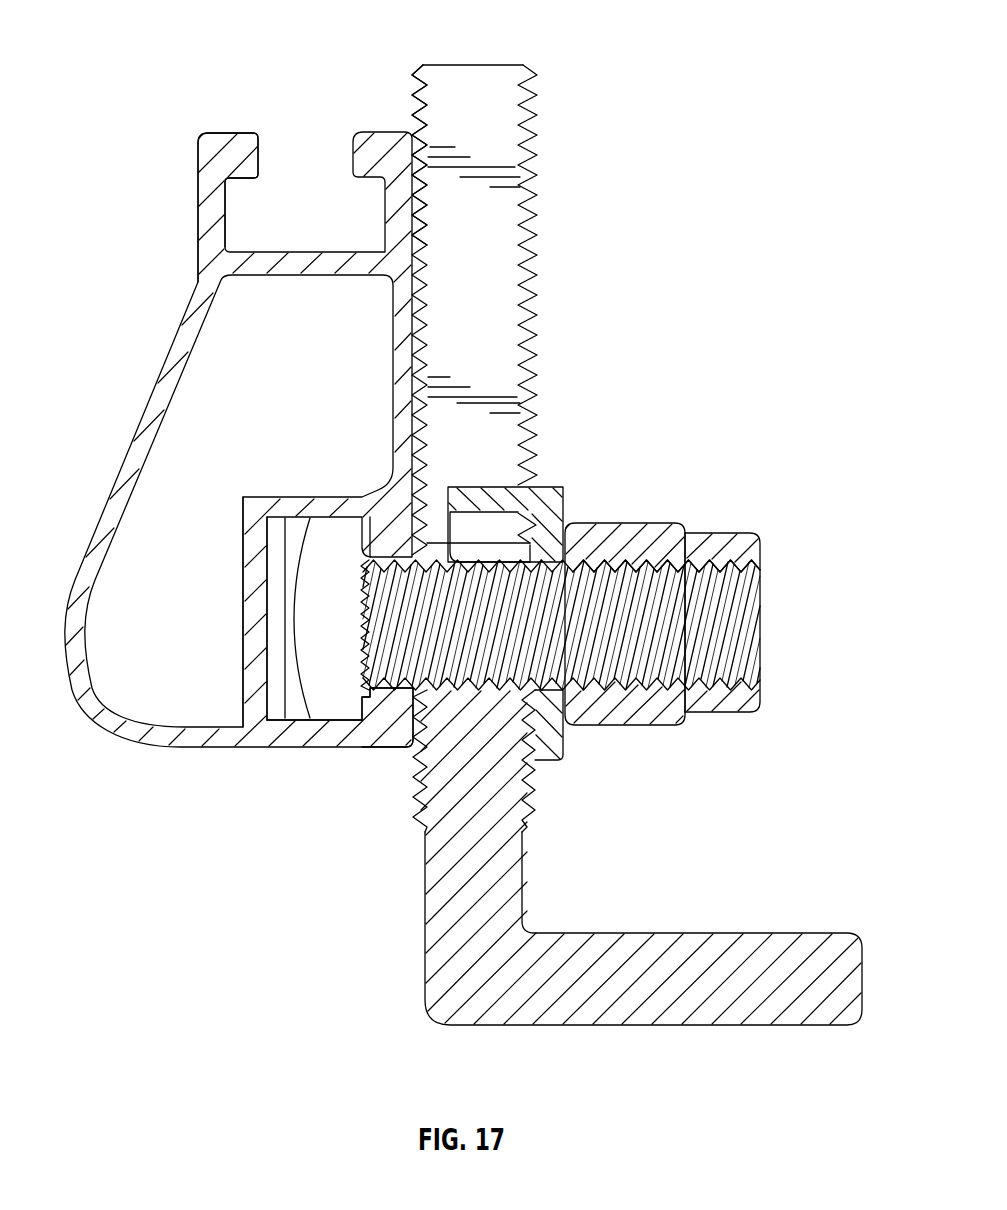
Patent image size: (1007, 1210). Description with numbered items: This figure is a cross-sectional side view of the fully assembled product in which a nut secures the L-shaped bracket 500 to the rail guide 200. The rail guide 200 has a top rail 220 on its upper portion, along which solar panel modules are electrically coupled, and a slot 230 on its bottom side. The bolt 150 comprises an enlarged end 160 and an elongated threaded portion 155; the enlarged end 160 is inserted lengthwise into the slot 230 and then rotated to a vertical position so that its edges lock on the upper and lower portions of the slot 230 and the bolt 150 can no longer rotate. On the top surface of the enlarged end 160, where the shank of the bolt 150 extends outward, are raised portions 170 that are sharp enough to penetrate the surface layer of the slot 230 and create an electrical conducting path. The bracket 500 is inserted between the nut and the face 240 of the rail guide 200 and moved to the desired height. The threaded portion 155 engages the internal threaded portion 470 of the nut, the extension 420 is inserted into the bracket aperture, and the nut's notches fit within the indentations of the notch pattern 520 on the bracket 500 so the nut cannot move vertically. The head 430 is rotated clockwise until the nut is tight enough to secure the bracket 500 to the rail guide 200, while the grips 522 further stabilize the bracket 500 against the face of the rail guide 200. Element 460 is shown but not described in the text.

The bolt 150 is at (643, 672).
The threaded portion 155 is at (650, 635).
The enlarged end 160 is at (327, 700).
The raised portions 170 is at (350, 713).
The rail guide 200 is at (168, 377).
The top rail 220 is at (197, 198).
The slot 230 is at (277, 702).
The face 240 is at (410, 745).
The extension 420 is at (546, 487).
The head 430 is at (733, 533).
The nut 460 is at (630, 524).
The internal threaded portion 470 is at (686, 566).
The L-shaped bracket 500 is at (758, 933).
The notch pattern 520 is at (537, 116).
The grips 522 is at (414, 118).